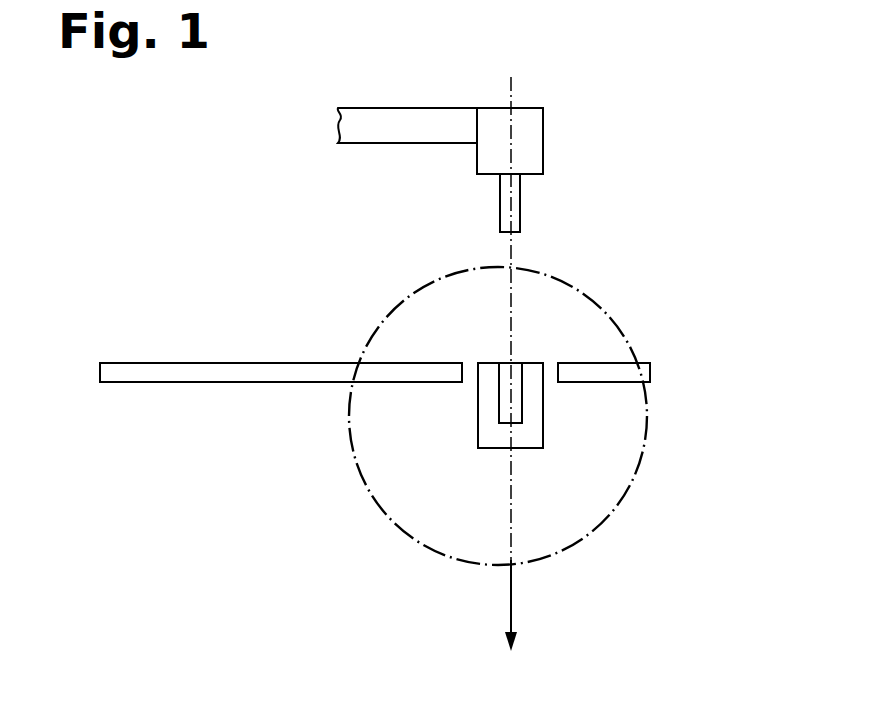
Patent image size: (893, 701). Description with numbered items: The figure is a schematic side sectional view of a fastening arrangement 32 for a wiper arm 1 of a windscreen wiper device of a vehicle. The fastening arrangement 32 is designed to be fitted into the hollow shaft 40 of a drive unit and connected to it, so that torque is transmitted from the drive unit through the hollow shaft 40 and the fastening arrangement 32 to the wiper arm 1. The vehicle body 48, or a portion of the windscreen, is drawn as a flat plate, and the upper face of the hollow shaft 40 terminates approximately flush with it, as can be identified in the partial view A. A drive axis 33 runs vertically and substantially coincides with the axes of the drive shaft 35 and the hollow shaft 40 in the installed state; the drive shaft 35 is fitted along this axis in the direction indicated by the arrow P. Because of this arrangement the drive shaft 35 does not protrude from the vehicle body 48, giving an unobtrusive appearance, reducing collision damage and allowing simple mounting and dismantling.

The wiper arm 1 is at (390, 143).
The fastening arrangement 32 is at (652, 150).
The drive shaft 35 is at (520, 204).
The vehicle body 48 is at (230, 382).
The hollow shaft 40 is at (543, 417).
The drive axis 33 is at (512, 490).
The partial view A is at (633, 472).
The arrow P is at (512, 602).